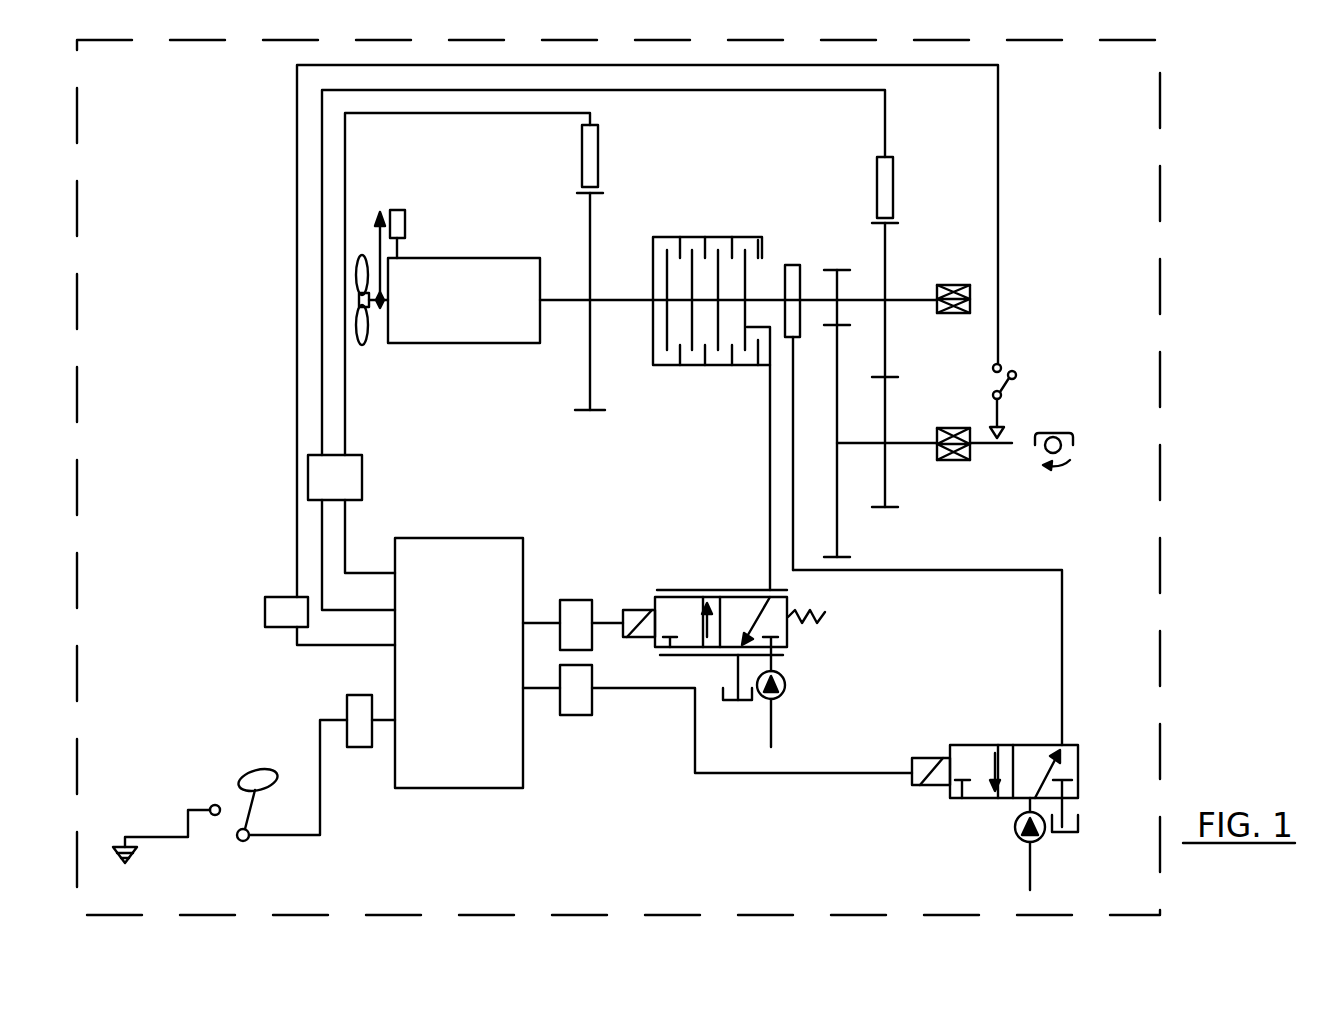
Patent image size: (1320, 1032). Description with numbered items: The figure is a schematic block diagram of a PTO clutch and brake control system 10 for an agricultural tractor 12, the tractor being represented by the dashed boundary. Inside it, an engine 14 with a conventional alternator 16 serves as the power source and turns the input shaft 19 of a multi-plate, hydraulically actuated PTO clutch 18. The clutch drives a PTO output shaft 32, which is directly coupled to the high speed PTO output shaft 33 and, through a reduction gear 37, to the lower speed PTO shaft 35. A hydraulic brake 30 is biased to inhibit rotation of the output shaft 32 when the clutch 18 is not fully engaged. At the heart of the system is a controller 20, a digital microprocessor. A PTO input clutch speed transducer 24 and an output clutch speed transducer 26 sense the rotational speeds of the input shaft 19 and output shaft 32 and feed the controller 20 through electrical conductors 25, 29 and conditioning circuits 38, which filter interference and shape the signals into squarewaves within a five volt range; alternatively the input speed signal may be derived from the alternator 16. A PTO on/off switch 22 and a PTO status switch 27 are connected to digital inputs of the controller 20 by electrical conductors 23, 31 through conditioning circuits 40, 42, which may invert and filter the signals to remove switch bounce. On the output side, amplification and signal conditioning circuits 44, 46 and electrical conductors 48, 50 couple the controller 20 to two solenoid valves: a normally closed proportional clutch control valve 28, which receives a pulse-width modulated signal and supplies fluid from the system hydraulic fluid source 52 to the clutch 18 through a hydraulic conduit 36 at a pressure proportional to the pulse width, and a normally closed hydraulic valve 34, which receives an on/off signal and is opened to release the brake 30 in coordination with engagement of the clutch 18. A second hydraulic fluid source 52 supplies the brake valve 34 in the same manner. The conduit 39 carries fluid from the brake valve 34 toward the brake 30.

The PTO clutch and brake control system 10 is at (610, 810).
The tractor 12 is at (1163, 270).
The engine 14 is at (447, 258).
The alternator 16 is at (407, 212).
The PTO clutch 18 is at (740, 212).
The input shaft 19 is at (640, 272).
The controller 20 is at (480, 538).
The PTO on/off switch 22 is at (223, 830).
The electrical conductor 23 is at (298, 837).
The PTO input clutch speed transducer 24 is at (598, 133).
The electrical conductor 25 is at (345, 390).
The output clutch speed transducer 26 is at (897, 158).
The PTO status switch 27 is at (1008, 363).
The clutch control valve 28 is at (670, 593).
The electrical conductor 29 is at (322, 388).
The hydraulic brake 30 is at (793, 263).
The electrical conductor 31 is at (998, 127).
The PTO output shaft 32 is at (815, 298).
The high speed PTO output shaft 33 is at (980, 250).
The hydraulic valve 34 is at (977, 745).
The PTO shaft 35 is at (958, 460).
The hydraulic conduit 36 is at (767, 412).
The reduction gear 37 is at (837, 363).
The conditioning circuits 38 is at (362, 465).
The hydraulic line to second clutch 39 is at (1007, 537).
The conditioning circuit 40 is at (347, 698).
The conditioning circuit 42 is at (265, 607).
The amplification and signal conditioning circuit 44 is at (570, 598).
The amplification and signal conditioning circuit 46 is at (580, 717).
The electrical conductor 48 is at (607, 618).
The electrical conductor 50 is at (748, 775).
The system hydraulic fluid source 52 is at (786, 691).